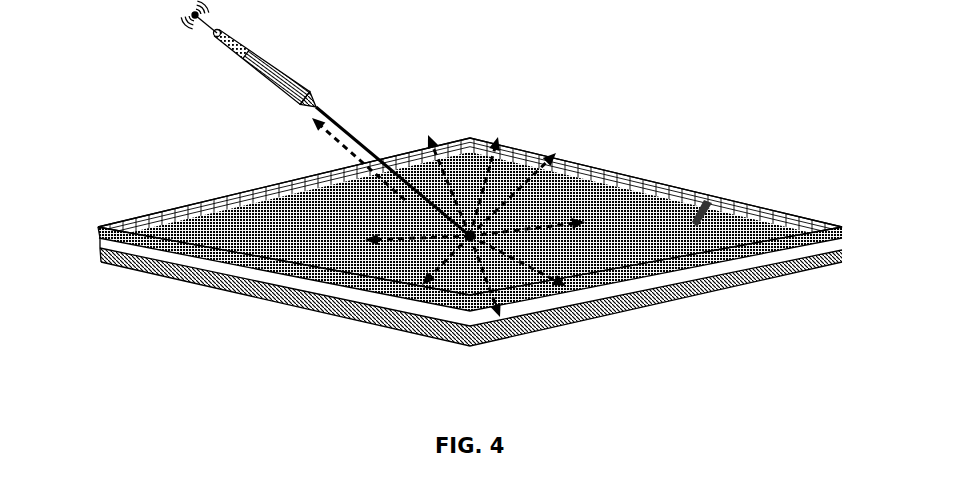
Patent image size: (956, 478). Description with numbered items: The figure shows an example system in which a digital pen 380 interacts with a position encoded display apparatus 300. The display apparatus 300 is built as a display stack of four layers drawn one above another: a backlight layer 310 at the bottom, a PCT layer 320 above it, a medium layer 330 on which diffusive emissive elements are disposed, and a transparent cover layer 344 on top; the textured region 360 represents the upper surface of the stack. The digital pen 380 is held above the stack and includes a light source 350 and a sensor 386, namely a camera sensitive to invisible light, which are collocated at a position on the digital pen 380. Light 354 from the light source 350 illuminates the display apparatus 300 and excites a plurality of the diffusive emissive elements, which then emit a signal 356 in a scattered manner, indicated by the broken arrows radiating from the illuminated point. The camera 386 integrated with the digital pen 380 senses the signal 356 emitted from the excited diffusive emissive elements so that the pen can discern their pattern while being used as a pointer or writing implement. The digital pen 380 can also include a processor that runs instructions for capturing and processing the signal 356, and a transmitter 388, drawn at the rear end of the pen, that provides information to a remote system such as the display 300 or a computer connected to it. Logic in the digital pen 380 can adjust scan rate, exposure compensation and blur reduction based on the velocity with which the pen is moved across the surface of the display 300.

The display apparatus 300 is at (677, 130).
The backlight layer 310 is at (282, 310).
The PCT layer 320 is at (226, 282).
The medium layer 330 is at (177, 262).
The transparent cover layer 344 is at (102, 259).
The light source 350 is at (318, 102).
The light 354 is at (362, 142).
The signal 356 is at (339, 153).
The touch surface 360 is at (700, 222).
The digital pen 380 is at (276, 64).
The sensor 386 is at (303, 116).
The transmitter 388 is at (240, 36).